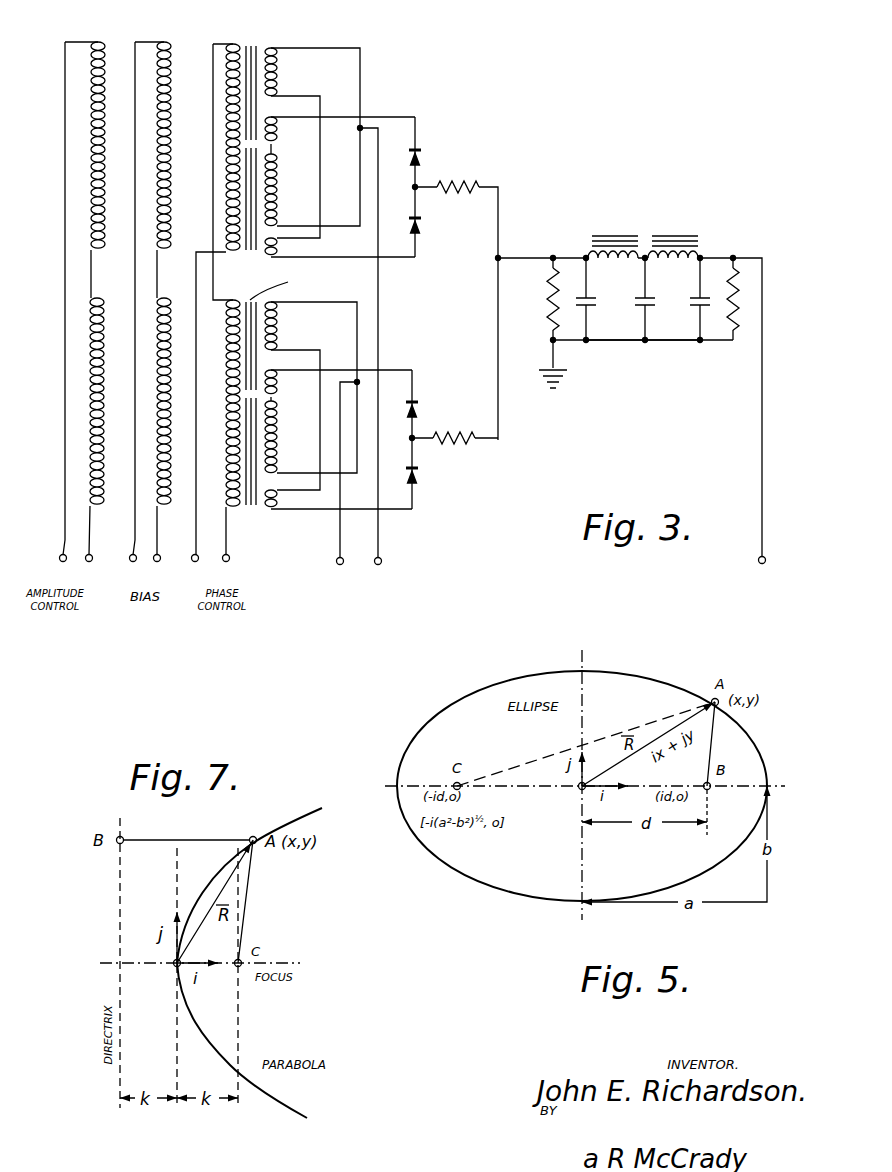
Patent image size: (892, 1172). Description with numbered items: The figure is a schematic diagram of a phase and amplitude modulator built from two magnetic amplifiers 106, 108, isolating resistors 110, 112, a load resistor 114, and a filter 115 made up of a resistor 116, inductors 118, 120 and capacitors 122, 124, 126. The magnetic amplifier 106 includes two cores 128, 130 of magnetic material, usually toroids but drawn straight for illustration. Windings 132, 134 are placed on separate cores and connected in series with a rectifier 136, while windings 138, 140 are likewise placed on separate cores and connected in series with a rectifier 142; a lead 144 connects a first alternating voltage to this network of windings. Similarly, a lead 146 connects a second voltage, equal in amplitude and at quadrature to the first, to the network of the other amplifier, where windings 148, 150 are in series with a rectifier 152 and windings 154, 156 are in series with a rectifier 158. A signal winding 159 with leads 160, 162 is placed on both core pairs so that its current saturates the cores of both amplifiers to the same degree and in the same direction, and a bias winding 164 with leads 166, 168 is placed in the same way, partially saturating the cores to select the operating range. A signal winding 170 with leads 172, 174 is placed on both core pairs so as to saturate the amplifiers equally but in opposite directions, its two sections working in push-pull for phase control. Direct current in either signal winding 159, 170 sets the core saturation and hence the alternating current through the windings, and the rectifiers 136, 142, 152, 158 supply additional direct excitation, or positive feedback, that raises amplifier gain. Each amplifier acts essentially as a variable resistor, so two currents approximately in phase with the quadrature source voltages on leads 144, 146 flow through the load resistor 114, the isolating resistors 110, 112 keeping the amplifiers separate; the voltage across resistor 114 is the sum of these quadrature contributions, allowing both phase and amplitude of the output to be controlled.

The signal winding 159 is at (68, 42).
The lead 162 is at (62, 533).
The lead 160 is at (88, 541).
The bias winding 164 is at (139, 42).
The lead 168 is at (132, 540).
The lead 166 is at (158, 541).
The signal winding 170 is at (215, 44).
The core 128 is at (248, 507).
The lead 174 is at (196, 540).
The lead 172 is at (227, 540).
The winding 148 is at (280, 77).
The winding 154 is at (276, 127).
The winding 156 is at (275, 184).
The winding 150 is at (279, 247).
The magnetic amplifier 108 is at (405, 83).
The rectifier 158 is at (421, 150).
The rectifier 152 is at (421, 218).
The isolating resistor 112 is at (457, 187).
The lead 146 is at (380, 537).
The core 130 is at (282, 287).
The winding 134 is at (280, 327).
The winding 138 is at (274, 378).
The winding 140 is at (275, 447).
The winding 132 is at (279, 501).
The magnetic amplifier 106 is at (433, 353).
The rectifier 142 is at (418, 402).
The rectifier 136 is at (418, 468).
The isolating resistor 110 is at (453, 440).
The lead 144 is at (339, 526).
The load resistor 114 is at (551, 300).
The inductor 118 is at (580, 252).
The inductor 120 is at (708, 250).
The capacitor 122 is at (591, 306).
The capacitor 124 is at (657, 299).
The capacitor 126 is at (701, 310).
The filter 115 is at (642, 320).
The resistor 116 is at (735, 331).